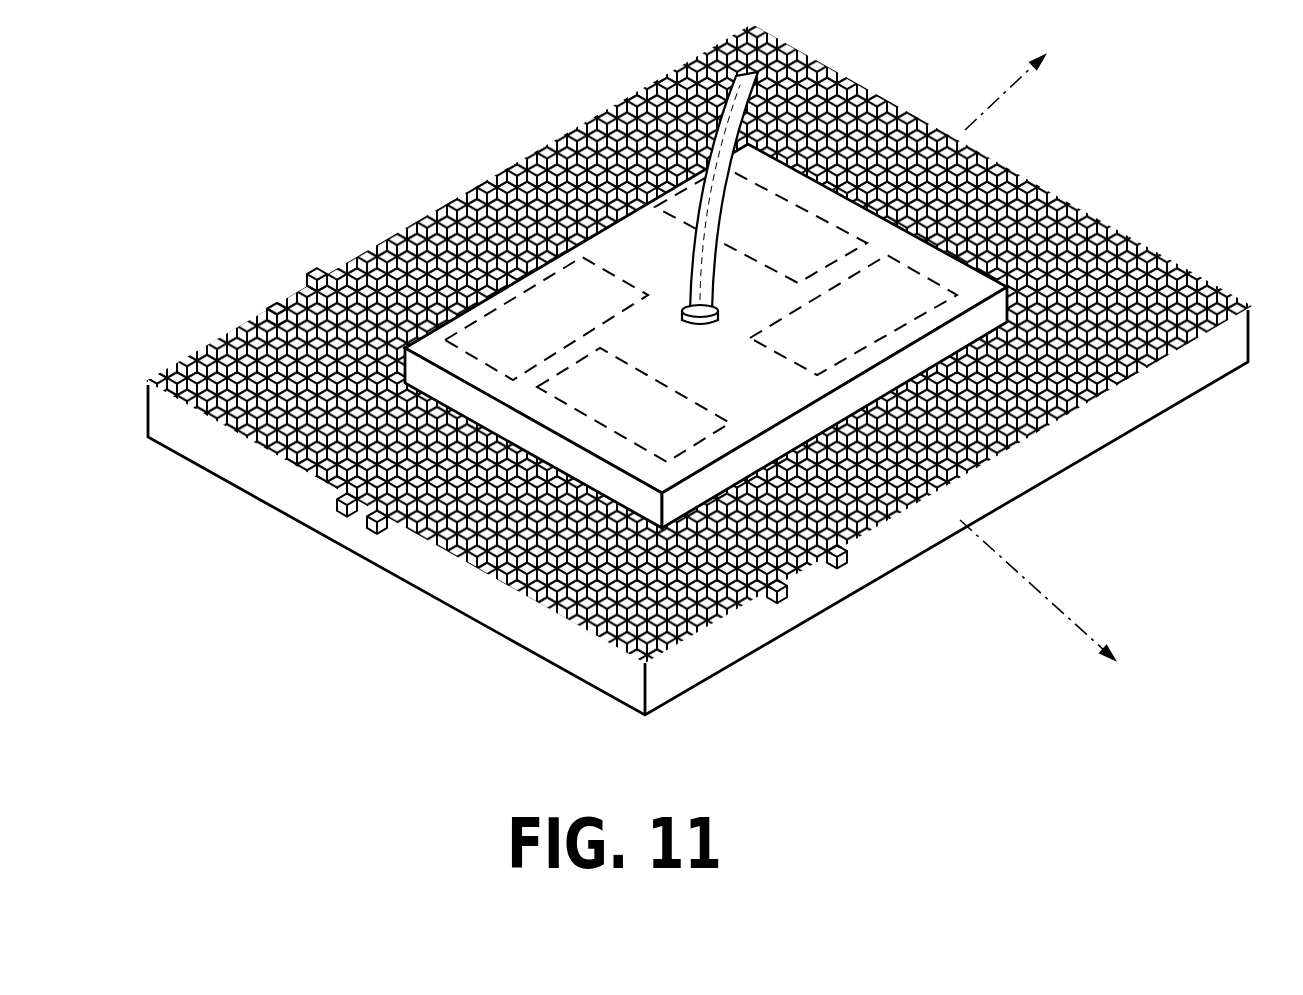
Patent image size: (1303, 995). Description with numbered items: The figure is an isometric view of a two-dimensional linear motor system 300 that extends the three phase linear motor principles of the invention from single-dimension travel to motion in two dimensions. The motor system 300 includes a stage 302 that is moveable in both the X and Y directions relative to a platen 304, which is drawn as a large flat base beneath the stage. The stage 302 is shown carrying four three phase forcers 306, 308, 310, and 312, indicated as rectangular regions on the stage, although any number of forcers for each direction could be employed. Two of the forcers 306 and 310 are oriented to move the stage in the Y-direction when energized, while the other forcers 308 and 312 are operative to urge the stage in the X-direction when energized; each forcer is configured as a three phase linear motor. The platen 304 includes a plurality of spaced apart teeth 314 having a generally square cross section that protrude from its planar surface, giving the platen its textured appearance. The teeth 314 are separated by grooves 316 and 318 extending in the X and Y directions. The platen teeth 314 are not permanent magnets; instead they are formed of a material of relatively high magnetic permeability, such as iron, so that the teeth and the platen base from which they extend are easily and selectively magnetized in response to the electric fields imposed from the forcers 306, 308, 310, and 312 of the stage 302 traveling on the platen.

The two-dimensional linear motor system 300 is at (714, 369).
The stage 302 is at (766, 390).
The platen 304 is at (699, 369).
The three phase forcer 306 is at (575, 327).
The three phase forcer 308 is at (668, 417).
The three phase forcer 310 is at (878, 335).
The three phase forcer 312 is at (802, 245).
The teeth 314 is at (268, 316).
The grooves 316 is at (779, 596).
The grooves 318 is at (382, 527).